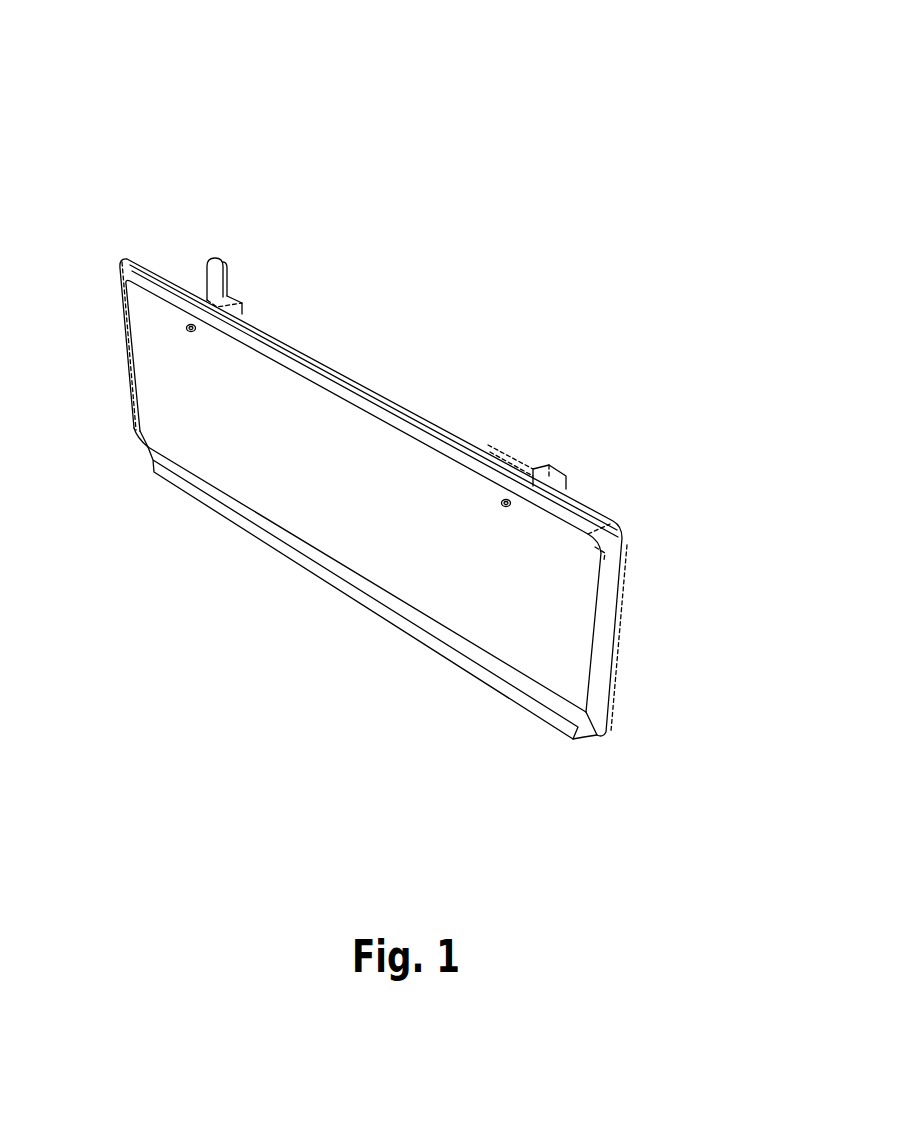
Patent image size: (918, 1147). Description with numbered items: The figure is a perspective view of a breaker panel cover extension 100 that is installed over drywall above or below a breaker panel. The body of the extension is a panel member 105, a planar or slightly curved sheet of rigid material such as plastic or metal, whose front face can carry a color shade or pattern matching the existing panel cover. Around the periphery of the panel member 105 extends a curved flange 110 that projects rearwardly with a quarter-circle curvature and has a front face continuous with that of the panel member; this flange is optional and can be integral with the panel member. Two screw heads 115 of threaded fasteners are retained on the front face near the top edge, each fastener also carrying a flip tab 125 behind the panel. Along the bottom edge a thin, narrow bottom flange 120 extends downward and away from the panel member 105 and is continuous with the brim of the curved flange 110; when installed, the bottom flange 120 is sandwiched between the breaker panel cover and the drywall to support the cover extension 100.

The cover extension 100 is at (448, 140).
The panel member 105 is at (606, 607).
The curved flange 110 is at (620, 656).
The screw heads 115 is at (181, 331).
The bottom flange 120 is at (557, 470).
The flip tab 125 is at (228, 269).